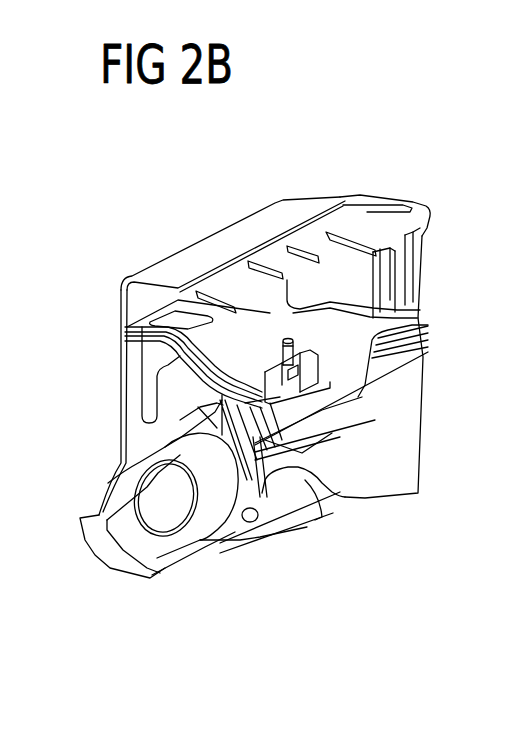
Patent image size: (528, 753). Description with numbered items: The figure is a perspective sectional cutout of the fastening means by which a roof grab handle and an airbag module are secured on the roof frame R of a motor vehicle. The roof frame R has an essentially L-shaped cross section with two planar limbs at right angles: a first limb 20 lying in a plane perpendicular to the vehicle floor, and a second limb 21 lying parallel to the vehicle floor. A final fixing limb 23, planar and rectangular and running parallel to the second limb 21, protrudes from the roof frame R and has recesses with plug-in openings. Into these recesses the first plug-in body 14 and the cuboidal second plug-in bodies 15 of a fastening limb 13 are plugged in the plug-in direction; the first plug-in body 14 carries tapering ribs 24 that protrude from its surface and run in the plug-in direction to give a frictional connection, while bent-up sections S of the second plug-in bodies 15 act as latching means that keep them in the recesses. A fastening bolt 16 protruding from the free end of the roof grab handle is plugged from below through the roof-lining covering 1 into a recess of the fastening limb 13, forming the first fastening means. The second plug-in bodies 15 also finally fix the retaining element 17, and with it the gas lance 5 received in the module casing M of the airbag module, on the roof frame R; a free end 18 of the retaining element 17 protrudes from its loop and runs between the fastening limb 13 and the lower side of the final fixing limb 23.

The roof-lining covering 1 is at (412, 460).
The gas lance 5 is at (163, 500).
The fastening limb 13 is at (318, 478).
The first plug-in body 14 is at (380, 275).
The second plug-in body 15 is at (322, 370).
The fastening bolt 16 is at (287, 338).
The retaining element 17 is at (210, 488).
The free end 18 is at (272, 470).
The first limb 20 is at (120, 298).
The second limb 21 is at (215, 245).
The final fixing limb 23 is at (255, 318).
The rib 24 is at (405, 278).
The roof frame R is at (180, 265).
The bent-up section S is at (345, 402).
The module casing M is at (190, 543).